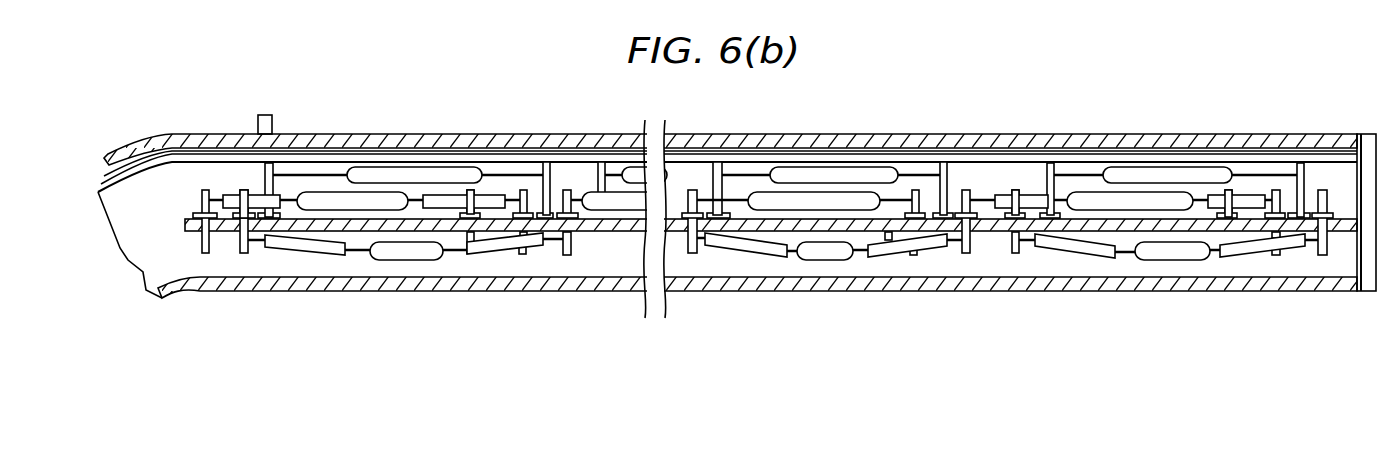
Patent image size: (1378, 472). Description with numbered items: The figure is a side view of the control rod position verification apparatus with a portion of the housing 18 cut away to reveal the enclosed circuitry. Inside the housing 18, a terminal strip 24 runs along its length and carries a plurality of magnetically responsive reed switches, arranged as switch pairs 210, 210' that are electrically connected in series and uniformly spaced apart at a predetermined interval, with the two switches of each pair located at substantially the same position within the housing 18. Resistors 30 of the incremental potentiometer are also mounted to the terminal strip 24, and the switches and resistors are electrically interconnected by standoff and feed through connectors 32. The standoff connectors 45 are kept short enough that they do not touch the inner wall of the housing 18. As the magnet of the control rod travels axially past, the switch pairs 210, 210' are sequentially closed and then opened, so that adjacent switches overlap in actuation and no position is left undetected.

The housing 18 is at (1000, 292).
The terminal strip 24 is at (218, 232).
The resistors 30 is at (408, 250).
The standoff and feed through connectors 32 is at (200, 250).
The standoff connectors 45 is at (948, 181).
The magnetically responsive switches 210 is at (785, 136).
The responsive switches of switch pair 210' is at (740, 154).